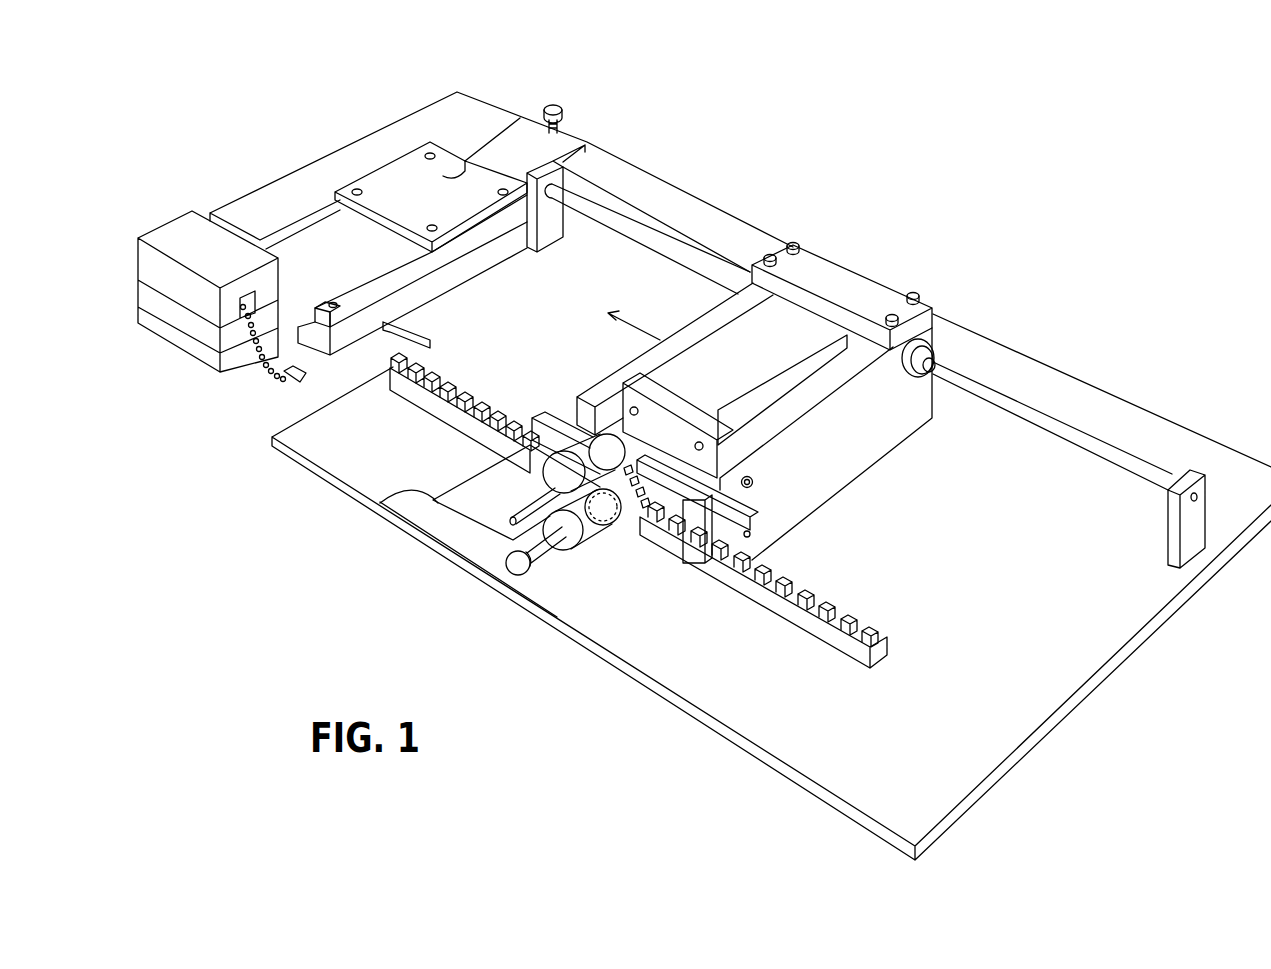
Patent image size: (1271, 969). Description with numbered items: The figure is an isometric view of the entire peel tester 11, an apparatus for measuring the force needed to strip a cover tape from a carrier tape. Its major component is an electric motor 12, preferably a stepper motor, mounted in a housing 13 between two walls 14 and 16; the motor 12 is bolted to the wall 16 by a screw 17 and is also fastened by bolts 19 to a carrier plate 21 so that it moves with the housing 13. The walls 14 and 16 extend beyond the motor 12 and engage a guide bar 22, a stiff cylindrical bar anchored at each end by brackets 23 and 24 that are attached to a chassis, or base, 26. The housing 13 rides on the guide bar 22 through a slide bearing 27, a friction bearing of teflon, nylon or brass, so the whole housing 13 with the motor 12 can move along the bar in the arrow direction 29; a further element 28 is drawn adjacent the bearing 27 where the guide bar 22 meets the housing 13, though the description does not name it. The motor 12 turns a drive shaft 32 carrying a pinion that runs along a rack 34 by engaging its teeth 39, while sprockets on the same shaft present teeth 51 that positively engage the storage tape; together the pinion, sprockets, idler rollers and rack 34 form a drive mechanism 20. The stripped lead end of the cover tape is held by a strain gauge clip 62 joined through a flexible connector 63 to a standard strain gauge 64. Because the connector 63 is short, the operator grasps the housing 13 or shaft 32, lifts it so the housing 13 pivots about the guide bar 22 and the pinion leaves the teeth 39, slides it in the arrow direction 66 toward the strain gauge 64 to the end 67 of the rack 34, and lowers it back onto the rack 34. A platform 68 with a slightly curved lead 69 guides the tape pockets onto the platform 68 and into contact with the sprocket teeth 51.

The tester 11 is at (784, 214).
The electric motor 12 is at (797, 335).
The housing 13 is at (838, 247).
The wall 14 is at (608, 313).
The wall 16 is at (835, 468).
The bolt or screw 17 is at (754, 485).
The bolts 19 is at (696, 446).
The drive mechanism 20 is at (516, 466).
The carrier plate 21 is at (685, 407).
The guide bar 22 is at (990, 397).
The bracket 23 is at (592, 160).
The bracket 24 is at (1202, 478).
The chassis 26 is at (1052, 378).
The slide bearing 27 is at (930, 342).
The coupling 28 is at (932, 380).
The arrow direction 29 is at (966, 508).
The drive shaft 32 is at (538, 575).
The rack 34 is at (828, 643).
The teeth 39 is at (428, 370).
The teeth 51 is at (622, 522).
The strain gauge clip 62 is at (290, 376).
The flexible connector 63 is at (262, 358).
The strain gauge 64 is at (182, 238).
The arrow direction 66 is at (643, 332).
The end 67 is at (390, 375).
The platform 68 is at (462, 512).
The curved lead 69 is at (380, 503).